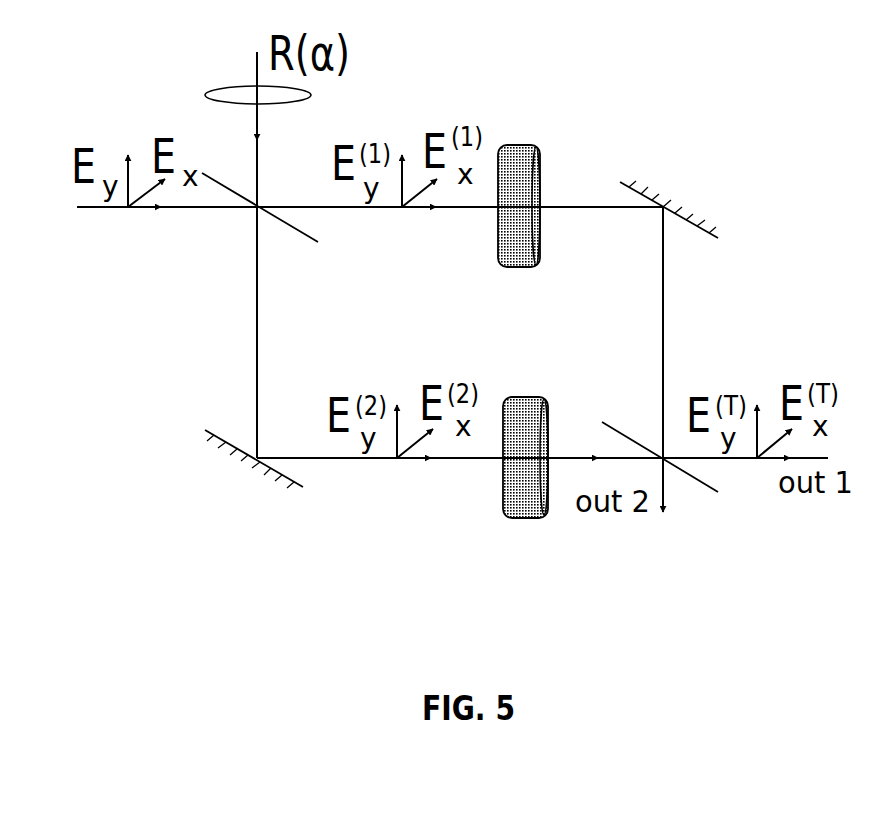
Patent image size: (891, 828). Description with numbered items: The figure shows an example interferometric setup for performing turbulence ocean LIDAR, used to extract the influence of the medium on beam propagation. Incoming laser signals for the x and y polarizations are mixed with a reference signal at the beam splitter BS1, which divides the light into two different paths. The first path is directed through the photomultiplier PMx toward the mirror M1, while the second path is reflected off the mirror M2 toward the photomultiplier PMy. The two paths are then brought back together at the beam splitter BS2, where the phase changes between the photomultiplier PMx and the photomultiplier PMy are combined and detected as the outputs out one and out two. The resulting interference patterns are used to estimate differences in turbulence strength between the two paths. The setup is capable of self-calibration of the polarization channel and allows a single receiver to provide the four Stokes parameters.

The beam splitter BS1 is at (263, 235).
The beam splitter BS2 is at (650, 437).
The mirror M1 is at (671, 202).
The mirror M2 is at (254, 470).
The photomultiplier PMx is at (557, 206).
The photomultiplier PMy is at (485, 460).